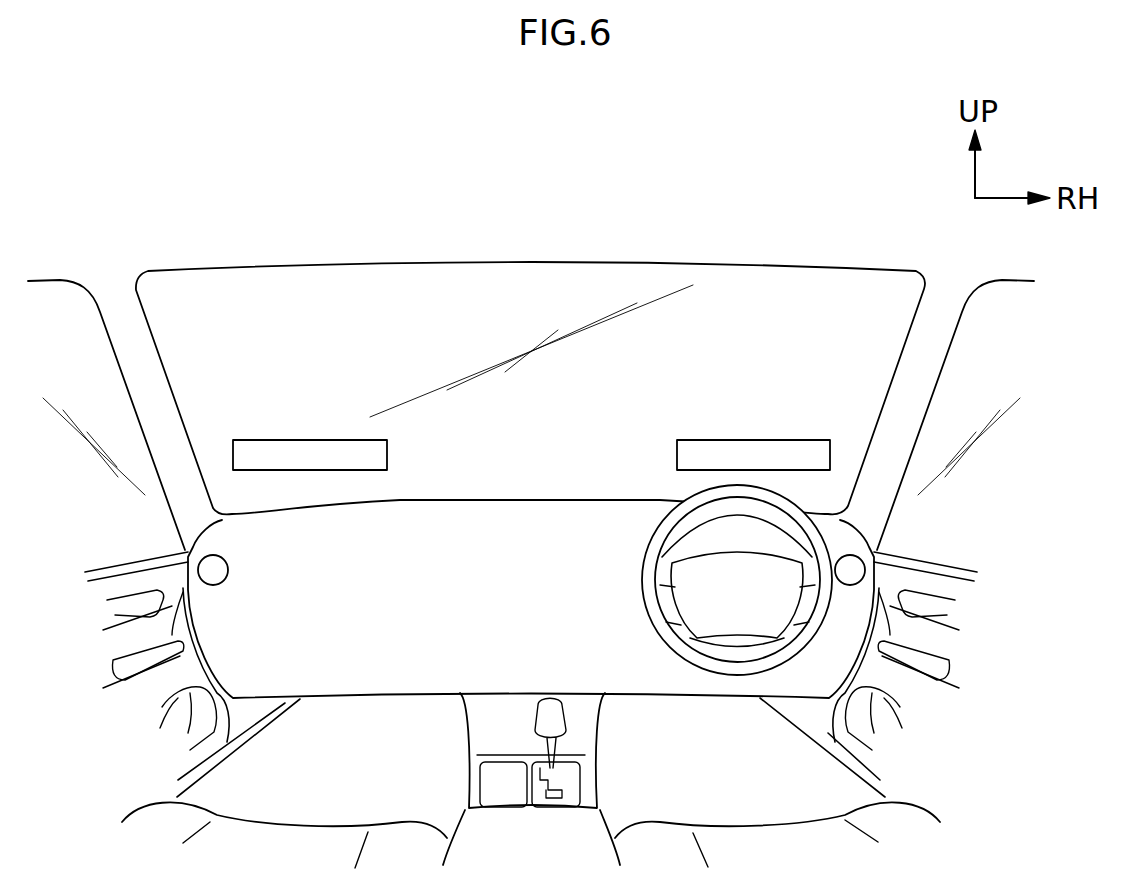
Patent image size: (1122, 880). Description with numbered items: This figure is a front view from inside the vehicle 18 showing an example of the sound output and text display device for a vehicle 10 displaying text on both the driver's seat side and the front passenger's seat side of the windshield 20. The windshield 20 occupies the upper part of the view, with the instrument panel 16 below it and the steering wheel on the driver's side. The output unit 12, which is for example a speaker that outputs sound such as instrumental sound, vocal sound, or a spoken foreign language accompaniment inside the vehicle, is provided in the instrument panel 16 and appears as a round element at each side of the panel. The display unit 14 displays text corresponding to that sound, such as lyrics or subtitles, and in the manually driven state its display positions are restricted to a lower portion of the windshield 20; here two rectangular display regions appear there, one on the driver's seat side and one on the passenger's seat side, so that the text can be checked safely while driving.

The sound output and text display device for a vehicle 10 is at (543, 222).
The output unit 12 is at (222, 583).
The display unit 14 is at (297, 438).
The instrument panel 16 is at (387, 693).
The vehicle 18 is at (798, 183).
The windshield 20 is at (285, 278).